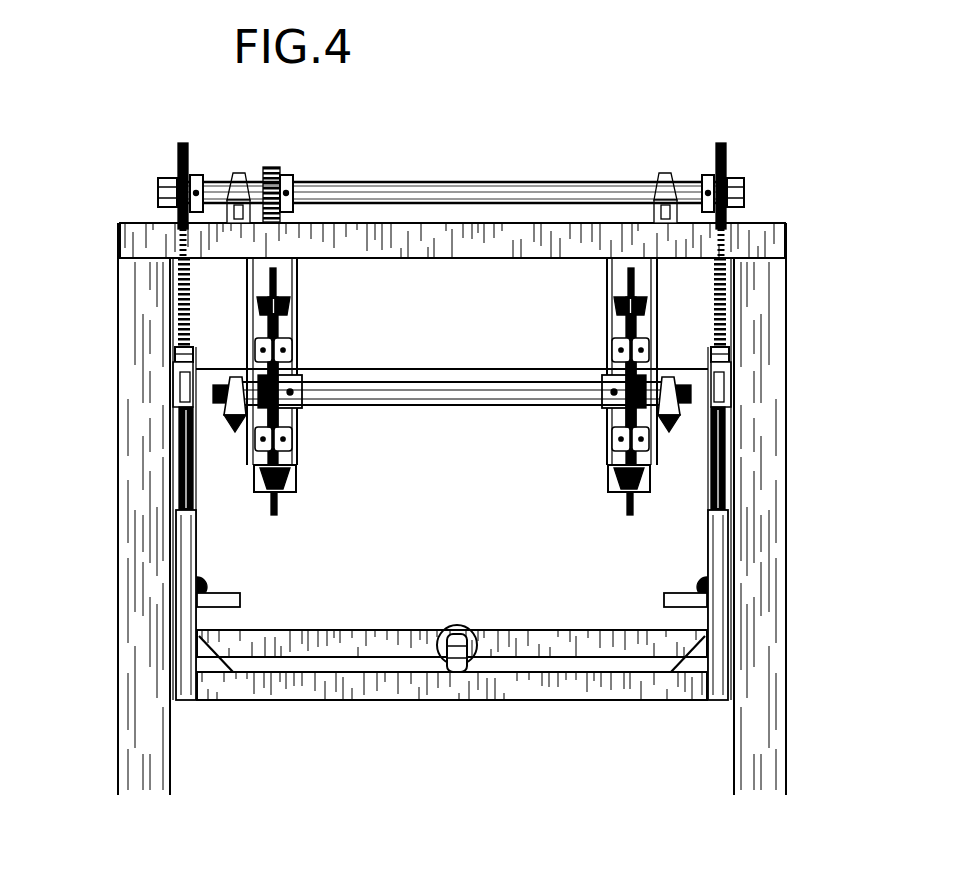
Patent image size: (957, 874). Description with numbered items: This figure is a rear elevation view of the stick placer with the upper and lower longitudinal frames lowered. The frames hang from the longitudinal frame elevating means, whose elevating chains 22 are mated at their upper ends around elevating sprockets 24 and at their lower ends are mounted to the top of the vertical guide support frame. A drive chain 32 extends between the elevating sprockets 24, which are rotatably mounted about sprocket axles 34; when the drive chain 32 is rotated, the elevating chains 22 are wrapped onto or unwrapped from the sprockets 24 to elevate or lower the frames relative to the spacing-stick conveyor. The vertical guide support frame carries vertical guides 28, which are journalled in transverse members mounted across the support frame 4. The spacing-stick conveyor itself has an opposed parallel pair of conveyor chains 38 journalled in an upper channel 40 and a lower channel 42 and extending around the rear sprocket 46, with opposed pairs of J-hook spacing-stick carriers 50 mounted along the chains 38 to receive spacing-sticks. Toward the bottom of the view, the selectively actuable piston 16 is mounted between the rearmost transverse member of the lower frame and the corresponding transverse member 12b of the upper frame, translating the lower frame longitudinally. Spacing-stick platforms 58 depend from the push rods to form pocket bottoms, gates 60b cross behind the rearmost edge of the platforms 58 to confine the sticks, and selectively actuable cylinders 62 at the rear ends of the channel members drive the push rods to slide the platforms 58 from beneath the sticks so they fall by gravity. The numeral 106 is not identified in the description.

The support frame 4 is at (145, 236).
The elevating chains 22 is at (172, 266).
The elevating sprockets 24 is at (183, 150).
The drive chain 32 is at (270, 170).
The sprocket axles 34 is at (432, 182).
The upper channel 40 is at (247, 281).
The lower channel 42 is at (293, 467).
The rear sprocket 46 is at (283, 377).
The J-hook spacing-stick carriers 50 is at (275, 293).
The conveyor chains 38 is at (278, 333).
The vertical guides 28 is at (185, 472).
The spacing-stick platforms 58 is at (200, 608).
The selectively actuable cylinders 62 is at (204, 578).
The gates 60b is at (240, 597).
The lower cross bar 106 is at (505, 630).
The selectively actuable piston 16 is at (458, 625).
The transverse member 12b is at (556, 688).